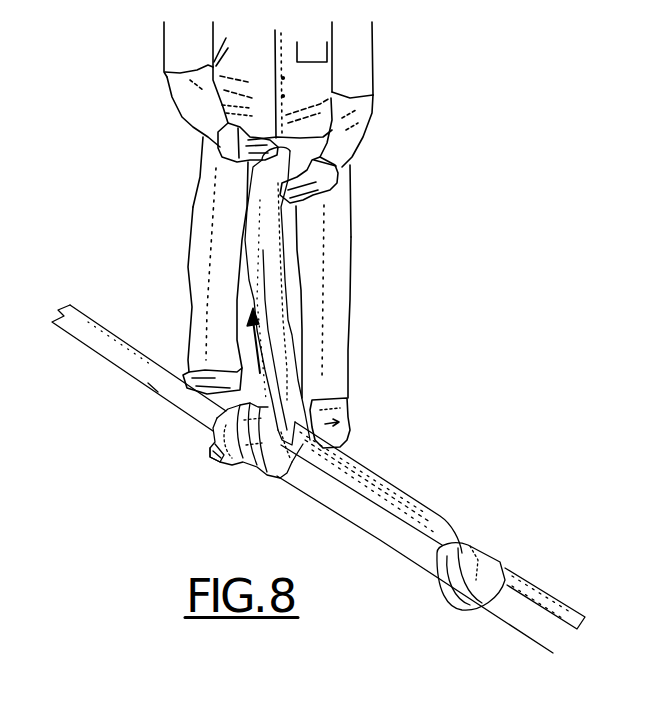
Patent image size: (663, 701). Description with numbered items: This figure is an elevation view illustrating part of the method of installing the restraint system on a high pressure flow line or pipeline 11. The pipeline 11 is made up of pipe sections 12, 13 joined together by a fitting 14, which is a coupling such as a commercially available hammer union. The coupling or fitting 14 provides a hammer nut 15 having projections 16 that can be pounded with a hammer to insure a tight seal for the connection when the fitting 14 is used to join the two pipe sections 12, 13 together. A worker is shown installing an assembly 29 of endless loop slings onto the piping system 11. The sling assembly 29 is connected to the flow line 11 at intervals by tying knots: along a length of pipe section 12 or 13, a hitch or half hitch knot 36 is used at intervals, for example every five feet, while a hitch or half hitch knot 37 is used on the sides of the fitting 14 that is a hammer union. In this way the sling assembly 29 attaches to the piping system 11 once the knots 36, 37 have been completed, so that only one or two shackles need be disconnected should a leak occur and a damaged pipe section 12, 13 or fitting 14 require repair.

The high pressure flow line or pipeline 11 is at (53, 383).
The pipe section 12 is at (527, 635).
The pipe section 13 is at (153, 388).
The fitting 14 is at (231, 464).
The hammer nut 15 is at (212, 436).
The projections 16 is at (215, 462).
The assembly of slings 29 is at (389, 487).
The hitch or half hitch knot 36 is at (483, 547).
The hitch or half hitch knot 37 is at (273, 480).